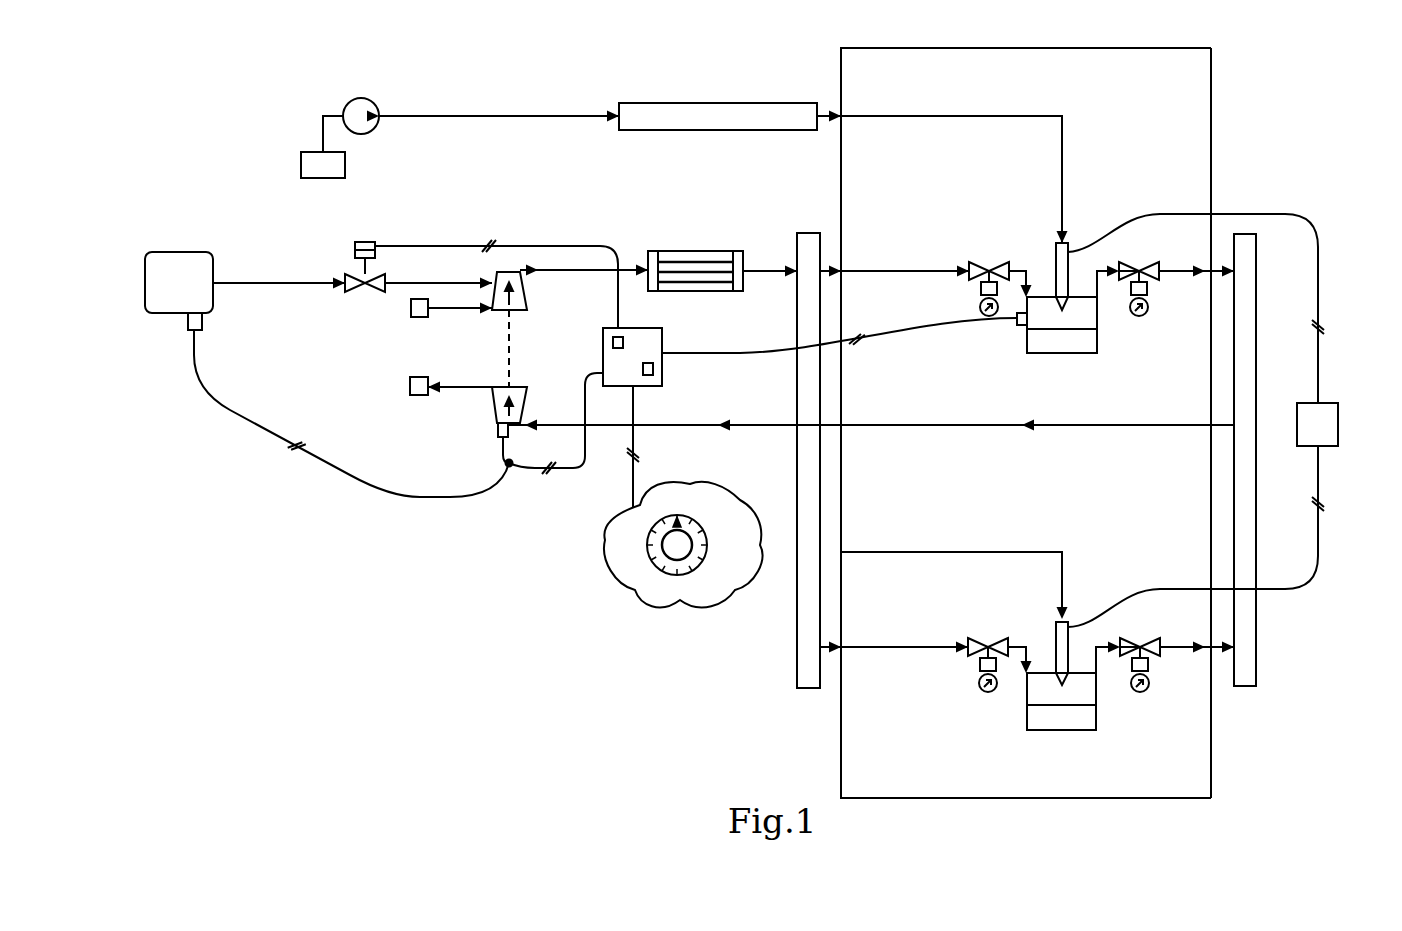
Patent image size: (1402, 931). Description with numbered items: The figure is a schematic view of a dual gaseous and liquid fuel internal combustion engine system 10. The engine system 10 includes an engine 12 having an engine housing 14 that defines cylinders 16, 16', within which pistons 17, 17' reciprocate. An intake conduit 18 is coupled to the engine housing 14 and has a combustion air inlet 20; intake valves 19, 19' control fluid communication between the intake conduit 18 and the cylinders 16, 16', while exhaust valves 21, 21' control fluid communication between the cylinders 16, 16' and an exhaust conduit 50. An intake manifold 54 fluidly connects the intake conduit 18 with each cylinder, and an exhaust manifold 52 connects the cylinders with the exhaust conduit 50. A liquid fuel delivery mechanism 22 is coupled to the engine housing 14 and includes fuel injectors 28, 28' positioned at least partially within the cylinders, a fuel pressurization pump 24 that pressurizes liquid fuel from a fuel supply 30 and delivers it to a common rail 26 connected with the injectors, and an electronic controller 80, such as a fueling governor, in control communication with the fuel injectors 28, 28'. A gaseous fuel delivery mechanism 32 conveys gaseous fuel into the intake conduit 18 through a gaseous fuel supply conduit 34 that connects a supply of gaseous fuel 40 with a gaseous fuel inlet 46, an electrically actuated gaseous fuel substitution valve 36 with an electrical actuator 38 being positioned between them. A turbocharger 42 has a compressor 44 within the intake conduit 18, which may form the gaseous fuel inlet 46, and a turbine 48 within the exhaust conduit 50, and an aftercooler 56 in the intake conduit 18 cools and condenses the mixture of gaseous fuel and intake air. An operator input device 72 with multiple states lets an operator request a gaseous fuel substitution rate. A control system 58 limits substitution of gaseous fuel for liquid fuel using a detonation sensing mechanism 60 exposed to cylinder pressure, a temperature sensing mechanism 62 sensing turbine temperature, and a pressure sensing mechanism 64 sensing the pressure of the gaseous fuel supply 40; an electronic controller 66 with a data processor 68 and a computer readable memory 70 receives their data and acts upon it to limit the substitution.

The dual gaseous and liquid fuel internal combustion engine system 10 is at (282, 110).
The engine 12 is at (1211, 48).
The engine housing 14 is at (1205, 104).
The cylinder 16 is at (1065, 316).
The piston 17 is at (1062, 362).
The intake conduit 18 is at (556, 278).
The intake valve 19 is at (925, 270).
The combustion air inlet 20 is at (411, 306).
The exhaust valve 21 is at (1176, 270).
The liquid fuel delivery mechanism 22 is at (830, 137).
The fuel pressurization pump 24 is at (359, 100).
The common rail 26 is at (710, 103).
The fuel injector 28 is at (954, 213).
The fuel source 30 is at (318, 178).
The gaseous fuel delivery mechanism 32 is at (330, 312).
The gaseous fuel supply conduit 34 is at (263, 281).
The gaseous fuel substitution valve 36 is at (354, 292).
The electrical actuator 38 is at (355, 246).
The supply of gaseous fuel 40 is at (176, 252).
The turbocharger 42 is at (478, 400).
The compressor 44 is at (496, 310).
The gaseous fuel inlet 46 is at (497, 274).
The turbine 48 is at (494, 387).
The exhaust conduit 50 is at (740, 430).
The exhaust manifold 52 is at (1256, 365).
The intake manifold 54 is at (797, 609).
The aftercooler 56 is at (695, 251).
The control system 58 is at (676, 377).
The detonation sensing mechanism 60 is at (1020, 325).
The temperature sensing mechanism 62 is at (497, 430).
The pressure sensing mechanism 64 is at (202, 322).
The electronic controller 66 is at (662, 333).
The data processor 68 is at (613, 342).
The computer readable memory 70 is at (648, 375).
The operator input device 72 is at (705, 568).
The electronic controller 80 is at (1328, 403).
The intake valve 19' is at (924, 646).
The exhaust valve 21' is at (1177, 646).
The fuel injector 28' is at (954, 618).
The cylinder 16' is at (1068, 693).
The piston 17' is at (1061, 740).